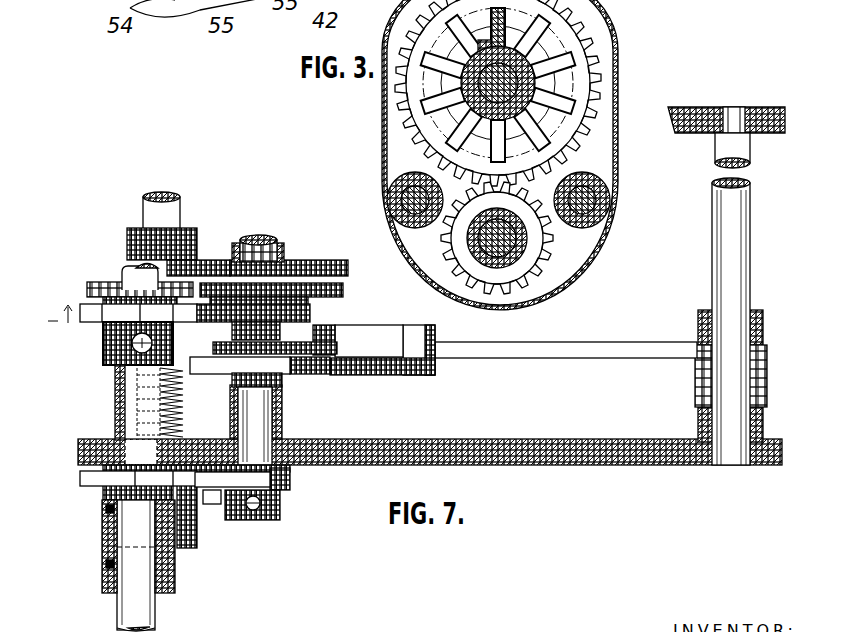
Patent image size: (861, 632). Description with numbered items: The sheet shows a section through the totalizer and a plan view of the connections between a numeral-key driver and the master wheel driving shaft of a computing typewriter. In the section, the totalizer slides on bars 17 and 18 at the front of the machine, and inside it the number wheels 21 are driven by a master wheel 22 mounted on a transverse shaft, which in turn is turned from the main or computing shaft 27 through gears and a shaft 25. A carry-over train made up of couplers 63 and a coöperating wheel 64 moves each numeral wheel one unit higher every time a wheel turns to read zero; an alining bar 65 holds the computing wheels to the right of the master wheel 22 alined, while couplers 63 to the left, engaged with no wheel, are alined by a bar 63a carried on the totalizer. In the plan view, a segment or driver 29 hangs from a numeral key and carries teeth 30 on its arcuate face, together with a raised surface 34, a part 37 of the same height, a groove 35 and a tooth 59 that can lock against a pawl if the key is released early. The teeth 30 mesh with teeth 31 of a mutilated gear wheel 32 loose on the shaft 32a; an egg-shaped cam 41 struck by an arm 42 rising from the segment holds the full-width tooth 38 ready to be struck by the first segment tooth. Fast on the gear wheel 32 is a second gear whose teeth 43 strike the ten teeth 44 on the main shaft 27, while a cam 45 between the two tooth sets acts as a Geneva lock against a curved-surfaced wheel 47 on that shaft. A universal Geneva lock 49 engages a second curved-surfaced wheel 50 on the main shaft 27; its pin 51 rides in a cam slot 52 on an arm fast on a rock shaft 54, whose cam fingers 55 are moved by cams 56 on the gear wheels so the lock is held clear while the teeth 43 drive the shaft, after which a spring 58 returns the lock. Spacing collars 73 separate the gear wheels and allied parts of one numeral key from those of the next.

In FIG. 3, the number wheels 21 is at (598, 44).
In FIG. 3, the master wheel 22 is at (492, 27).
In FIG. 3, the shaft 25 is at (487, 82).
In FIG. 3, the couplers 63 is at (573, 108).
In FIG. 3, the alining bar 63a is at (567, 85).
In FIG. 3, the alining bar 65 is at (507, 17).
In FIG. 3, the bar 18 is at (388, 200).
In FIG. 3, the bar 17 is at (610, 200).
In FIG. 3, the coöperating wheel 64 is at (537, 270).
In FIG. 7, the rock shaft 54 is at (178, 208).
In FIG. 7, the cam fingers 55 is at (212, 258).
In FIG. 7, the cams 56 is at (318, 270).
In FIG. 7, the spacing collars 73 is at (280, 252).
In FIG. 7, the teeth 43 is at (337, 292).
In FIG. 7, the teeth 44 is at (87, 288).
In FIG. 7, the main or computing shaft 27 is at (123, 277).
In FIG. 7, the wheel 47 is at (95, 315).
In FIG. 7, the tooth 38 is at (298, 324).
In FIG. 7, the groove 35 is at (340, 335).
In FIG. 7, the raised surface 34 is at (396, 334).
In FIG. 7, the teeth 30 is at (337, 343).
In FIG. 7, the mutilated gear wheel 32 is at (238, 343).
In FIG. 7, the shaft 32a is at (258, 428).
In FIG. 7, the teeth 31 is at (217, 347).
In FIG. 7, the cam 45 is at (268, 357).
In FIG. 7, the part 37 is at (300, 372).
In FIG. 7, the tooth 59 is at (390, 367).
In FIG. 7, the egg-shaped cam 41 is at (263, 363).
In FIG. 7, the arm 42 is at (207, 367).
In FIG. 7, the spring 58 is at (181, 426).
In FIG. 7, the segment or driver 29 is at (585, 350).
In FIG. 7, the curved surfaced wheel 50 is at (80, 480).
In FIG. 7, the universal Geneva lock 49 is at (230, 477).
In FIG. 7, the pin 51 is at (217, 504).
In FIG. 7, the cam slot 52 is at (233, 503).